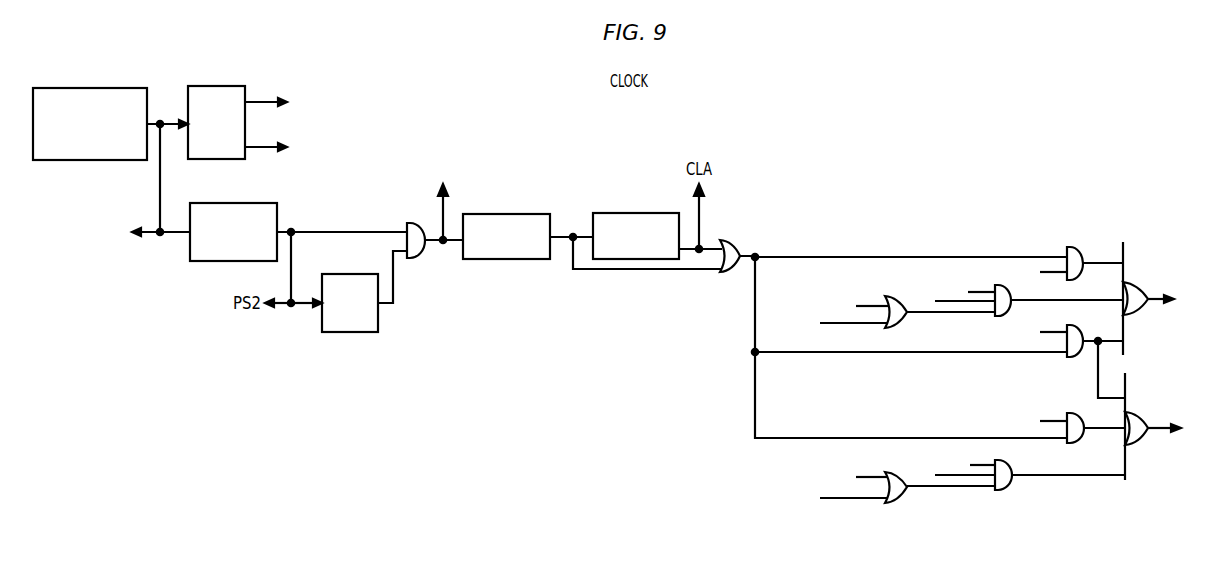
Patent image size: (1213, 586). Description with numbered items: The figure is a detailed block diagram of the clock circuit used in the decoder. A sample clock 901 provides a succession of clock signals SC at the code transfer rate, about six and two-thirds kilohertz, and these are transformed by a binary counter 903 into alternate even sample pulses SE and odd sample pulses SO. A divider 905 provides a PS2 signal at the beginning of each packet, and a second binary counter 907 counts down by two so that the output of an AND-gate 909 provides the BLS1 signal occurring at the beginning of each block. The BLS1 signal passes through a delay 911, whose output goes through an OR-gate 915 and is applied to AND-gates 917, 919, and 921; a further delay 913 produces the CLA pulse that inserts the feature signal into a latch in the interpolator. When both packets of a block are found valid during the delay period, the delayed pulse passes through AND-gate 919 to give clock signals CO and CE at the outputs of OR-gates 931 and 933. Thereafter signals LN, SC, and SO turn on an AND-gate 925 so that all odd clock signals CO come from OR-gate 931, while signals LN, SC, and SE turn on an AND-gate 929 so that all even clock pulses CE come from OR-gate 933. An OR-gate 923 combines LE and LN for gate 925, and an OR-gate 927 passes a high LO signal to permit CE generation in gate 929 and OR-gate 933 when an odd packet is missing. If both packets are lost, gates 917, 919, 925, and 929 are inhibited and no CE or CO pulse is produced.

The sample clock 901 is at (89, 58).
The binary counter 903 is at (213, 78).
The divider 905 is at (239, 195).
The binary counter 907 is at (370, 317).
The AND-gate 909 is at (407, 250).
The delay 911 is at (500, 206).
The delay 913 is at (621, 205).
The OR-gate 915 is at (716, 232).
The AND-gate 917 is at (1062, 239).
The AND-gate 919 is at (1062, 317).
The AND-gate 921 is at (1068, 392).
The OR-gate 923 is at (891, 318).
The AND-gate 925 is at (990, 277).
The OR-gate 927 is at (891, 492).
The AND-gate 929 is at (998, 452).
The OR-gate 931 is at (1122, 275).
The OR-gate 933 is at (1124, 405).